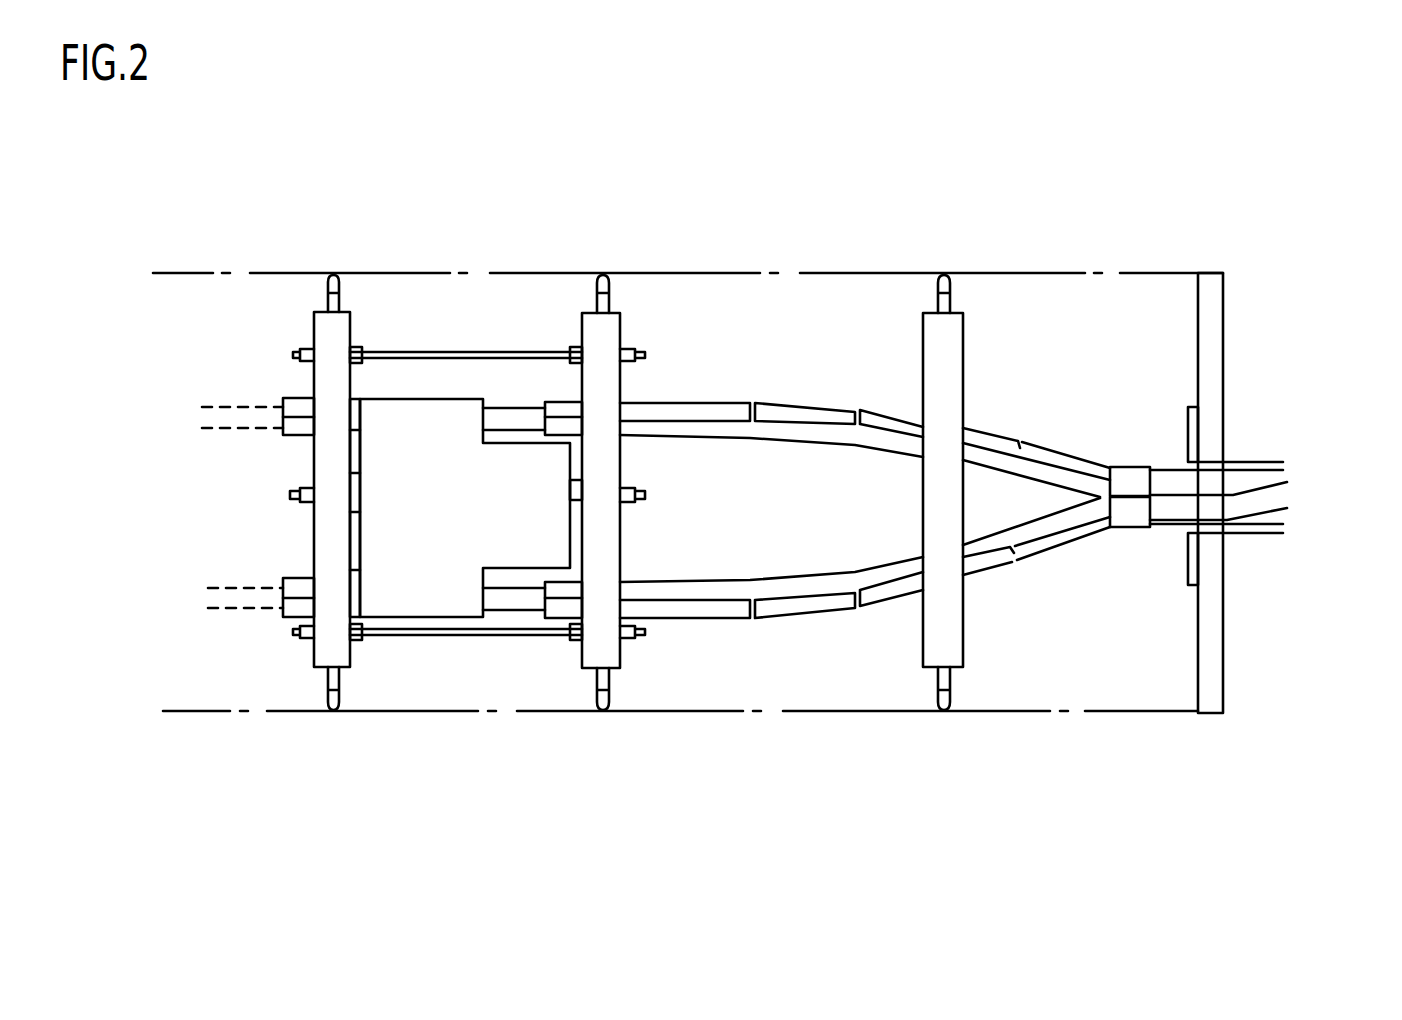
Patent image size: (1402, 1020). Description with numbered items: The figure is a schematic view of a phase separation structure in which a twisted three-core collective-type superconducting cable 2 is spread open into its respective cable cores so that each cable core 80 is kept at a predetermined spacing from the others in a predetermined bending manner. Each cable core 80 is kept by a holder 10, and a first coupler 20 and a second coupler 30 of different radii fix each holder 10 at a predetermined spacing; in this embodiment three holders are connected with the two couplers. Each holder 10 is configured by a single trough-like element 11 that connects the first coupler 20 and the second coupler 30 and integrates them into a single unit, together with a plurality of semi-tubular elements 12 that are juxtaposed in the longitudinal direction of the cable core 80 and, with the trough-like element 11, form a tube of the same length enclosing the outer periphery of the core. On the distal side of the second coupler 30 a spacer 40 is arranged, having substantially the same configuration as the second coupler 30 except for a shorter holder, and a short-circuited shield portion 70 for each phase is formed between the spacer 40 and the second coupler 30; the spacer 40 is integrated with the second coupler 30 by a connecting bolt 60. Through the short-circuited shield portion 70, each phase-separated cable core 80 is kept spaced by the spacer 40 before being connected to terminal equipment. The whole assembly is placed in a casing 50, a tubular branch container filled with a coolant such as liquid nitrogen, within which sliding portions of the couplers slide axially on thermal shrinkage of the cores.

The three-core collective-type superconducting cable 2 is at (1314, 476).
The holder 10 is at (953, 670).
The trough-like element 11 is at (670, 590).
The semi-tubular element 12 is at (802, 605).
The first coupler 20 is at (953, 347).
The second coupler 30 is at (612, 337).
The spacer 40 is at (340, 338).
The casing 50 is at (225, 273).
The connecting bolt 60 is at (460, 638).
The short-circuited shield portion 70 is at (412, 575).
The cable core 80 is at (212, 428).